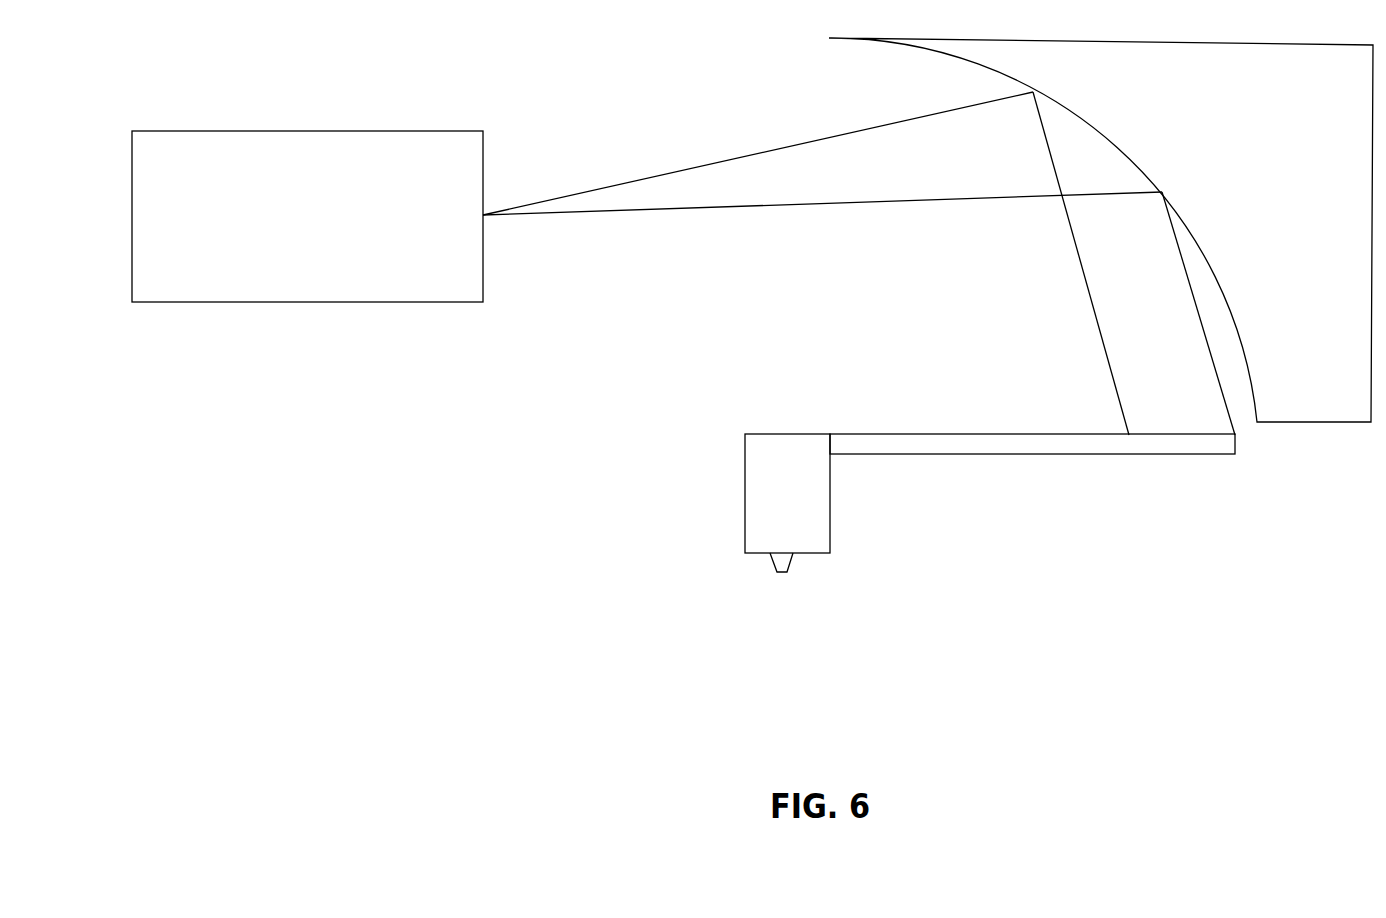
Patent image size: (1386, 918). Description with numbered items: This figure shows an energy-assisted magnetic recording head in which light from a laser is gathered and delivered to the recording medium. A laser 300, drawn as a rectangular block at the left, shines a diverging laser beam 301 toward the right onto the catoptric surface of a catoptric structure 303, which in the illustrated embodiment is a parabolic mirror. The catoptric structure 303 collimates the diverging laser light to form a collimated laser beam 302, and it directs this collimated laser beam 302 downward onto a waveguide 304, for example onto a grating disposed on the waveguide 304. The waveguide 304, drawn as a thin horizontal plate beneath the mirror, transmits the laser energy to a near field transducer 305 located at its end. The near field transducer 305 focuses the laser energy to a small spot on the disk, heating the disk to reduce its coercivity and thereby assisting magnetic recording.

The laser 300 is at (274, 232).
The diverging laser beam 301 is at (852, 185).
The collimated laser beam 302 is at (1118, 314).
The catoptric structure 303 is at (1241, 152).
The waveguide 304 is at (1052, 454).
The near field transducer 305 is at (771, 510).